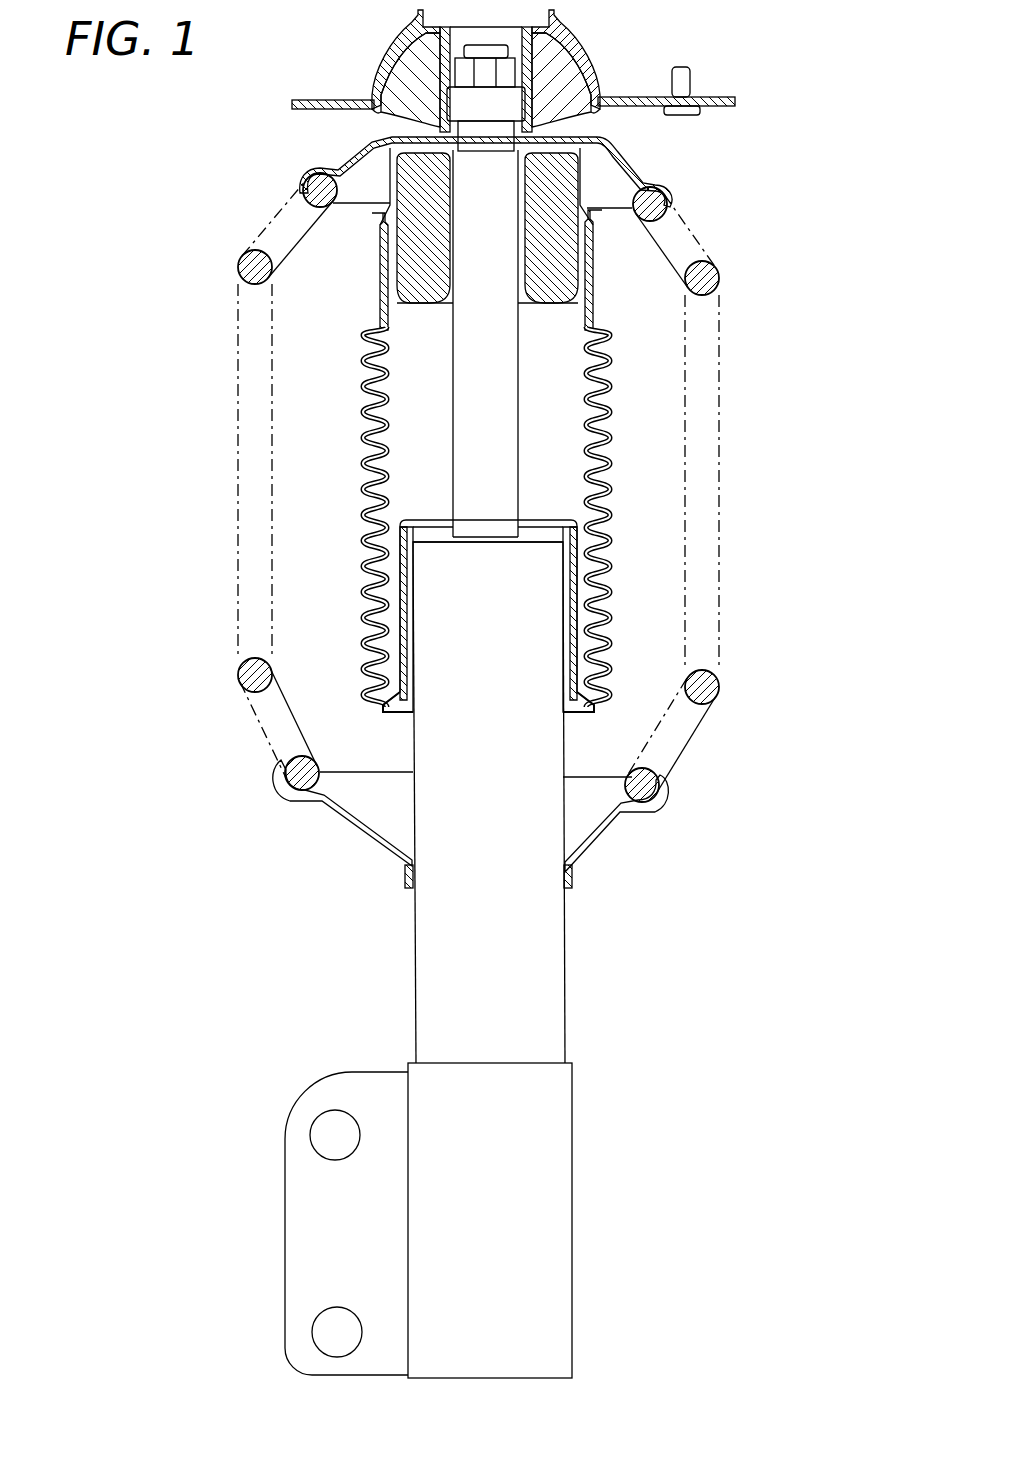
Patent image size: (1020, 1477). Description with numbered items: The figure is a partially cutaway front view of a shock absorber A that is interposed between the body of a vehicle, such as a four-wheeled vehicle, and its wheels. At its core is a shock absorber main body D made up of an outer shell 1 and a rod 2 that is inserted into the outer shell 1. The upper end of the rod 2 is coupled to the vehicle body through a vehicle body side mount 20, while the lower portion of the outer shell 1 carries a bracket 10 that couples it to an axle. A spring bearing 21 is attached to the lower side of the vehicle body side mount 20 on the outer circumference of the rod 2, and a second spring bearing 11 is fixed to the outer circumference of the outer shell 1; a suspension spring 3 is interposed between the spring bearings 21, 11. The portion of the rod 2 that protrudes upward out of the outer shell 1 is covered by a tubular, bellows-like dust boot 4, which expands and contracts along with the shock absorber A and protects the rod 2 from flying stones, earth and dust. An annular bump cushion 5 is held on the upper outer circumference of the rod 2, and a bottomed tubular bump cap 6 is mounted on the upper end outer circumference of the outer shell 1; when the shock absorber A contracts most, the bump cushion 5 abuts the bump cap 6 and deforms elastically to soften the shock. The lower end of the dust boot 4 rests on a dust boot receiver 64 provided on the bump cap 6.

The shock absorber A is at (735, 233).
The shock absorber main body D is at (405, 956).
The outer shell 1 is at (555, 1006).
The rod 2 is at (512, 421).
The suspension spring 3 is at (238, 263).
The dust boot 4 is at (368, 426).
The bump cushion 5 is at (548, 270).
The bump cap 6 is at (398, 605).
The bracket 10 is at (298, 1232).
The spring bearing 11 is at (604, 840).
The vehicle body side mount 20 is at (586, 68).
The spring bearing 21 is at (630, 180).
The dust boot receiver 64 is at (404, 713).